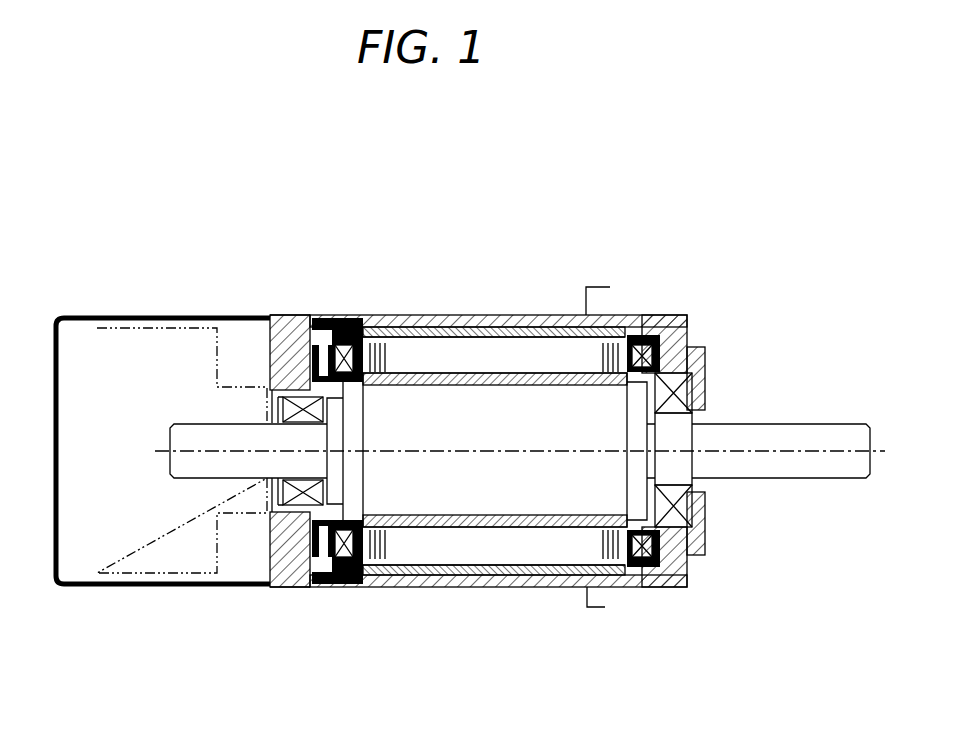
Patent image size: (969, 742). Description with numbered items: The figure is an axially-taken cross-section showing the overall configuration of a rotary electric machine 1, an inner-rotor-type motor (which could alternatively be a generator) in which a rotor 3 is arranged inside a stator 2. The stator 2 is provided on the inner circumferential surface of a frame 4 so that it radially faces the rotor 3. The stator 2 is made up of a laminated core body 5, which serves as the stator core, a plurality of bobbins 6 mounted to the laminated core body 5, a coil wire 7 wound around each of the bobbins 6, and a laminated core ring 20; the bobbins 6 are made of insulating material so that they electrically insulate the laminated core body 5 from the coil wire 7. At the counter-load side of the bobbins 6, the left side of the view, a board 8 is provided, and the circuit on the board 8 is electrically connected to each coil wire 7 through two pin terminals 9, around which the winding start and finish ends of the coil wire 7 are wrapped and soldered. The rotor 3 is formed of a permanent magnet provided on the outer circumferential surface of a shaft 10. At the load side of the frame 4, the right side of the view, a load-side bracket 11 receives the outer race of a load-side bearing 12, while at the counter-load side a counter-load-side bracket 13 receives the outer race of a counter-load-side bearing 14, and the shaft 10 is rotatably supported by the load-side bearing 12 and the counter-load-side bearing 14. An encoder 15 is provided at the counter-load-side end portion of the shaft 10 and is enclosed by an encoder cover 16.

The rotary electric machine 1 is at (728, 302).
The stator 2 is at (428, 232).
The rotor 3 is at (495, 530).
The frame 4 is at (373, 587).
The laminated core body 5 is at (511, 336).
The bobbin 6 is at (337, 327).
The coil wire 7 is at (398, 334).
The board 8 is at (300, 395).
The pin terminal 9 is at (320, 332).
The shaft 10 is at (803, 428).
The load-side bracket 11 is at (676, 521).
The load-side bearing 12 is at (660, 565).
The counter-load-side bracket 13 is at (287, 573).
The counter-load-side bearing 14 is at (280, 553).
The encoder 15 is at (122, 328).
The encoder cover 16 is at (124, 588).
The laminated core ring 20 is at (447, 587).